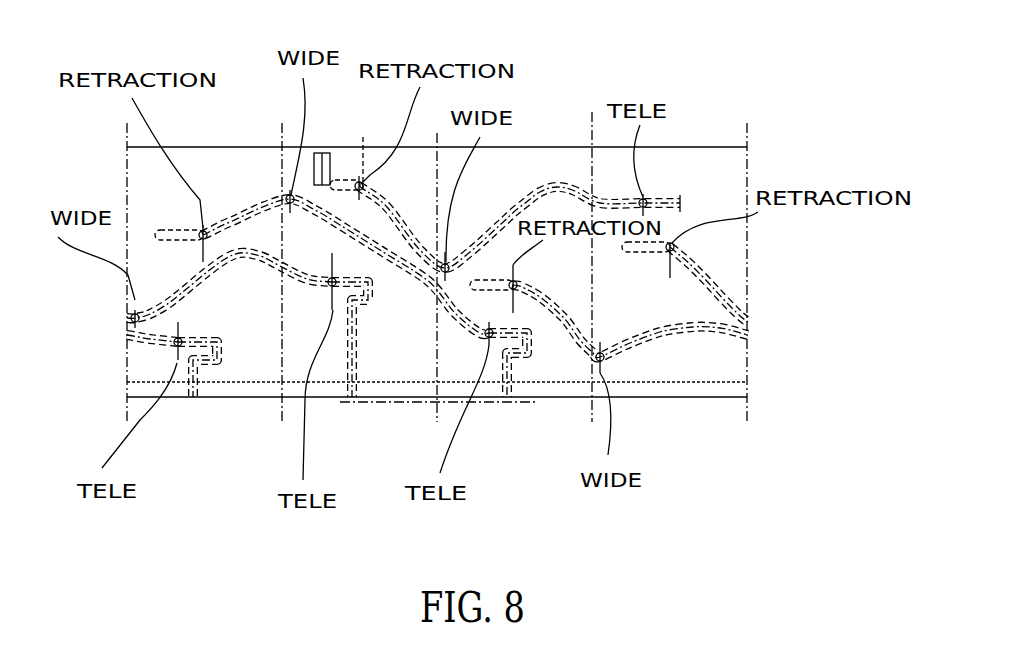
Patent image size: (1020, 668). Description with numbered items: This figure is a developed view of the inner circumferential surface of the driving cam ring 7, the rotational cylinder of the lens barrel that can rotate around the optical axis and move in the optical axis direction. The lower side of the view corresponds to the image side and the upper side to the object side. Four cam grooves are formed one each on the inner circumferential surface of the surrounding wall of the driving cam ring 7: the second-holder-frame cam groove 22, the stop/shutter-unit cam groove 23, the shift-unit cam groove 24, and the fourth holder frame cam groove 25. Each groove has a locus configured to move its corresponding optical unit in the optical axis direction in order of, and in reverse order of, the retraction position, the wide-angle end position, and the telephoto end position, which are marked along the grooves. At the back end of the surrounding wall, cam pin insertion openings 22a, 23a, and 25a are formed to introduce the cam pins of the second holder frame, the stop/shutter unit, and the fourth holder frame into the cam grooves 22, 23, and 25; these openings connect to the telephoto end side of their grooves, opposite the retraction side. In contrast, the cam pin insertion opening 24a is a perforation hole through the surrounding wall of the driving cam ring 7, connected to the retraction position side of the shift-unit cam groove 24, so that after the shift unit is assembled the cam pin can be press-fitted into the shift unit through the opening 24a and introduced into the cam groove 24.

The driving cam ring 7 is at (695, 147).
The second-holder-frame cam groove 22 is at (252, 218).
The cam pin insertion opening 22a is at (510, 397).
The stop/shutter-unit cam groove 23 is at (643, 350).
The cam pin insertion opening 23a is at (200, 390).
The shift-unit cam groove 24 is at (538, 186).
The cam pin insertion opening 24a is at (331, 166).
The fourth holder frame cam groove 25 is at (248, 262).
The cam pin insertion opening 25a is at (355, 397).